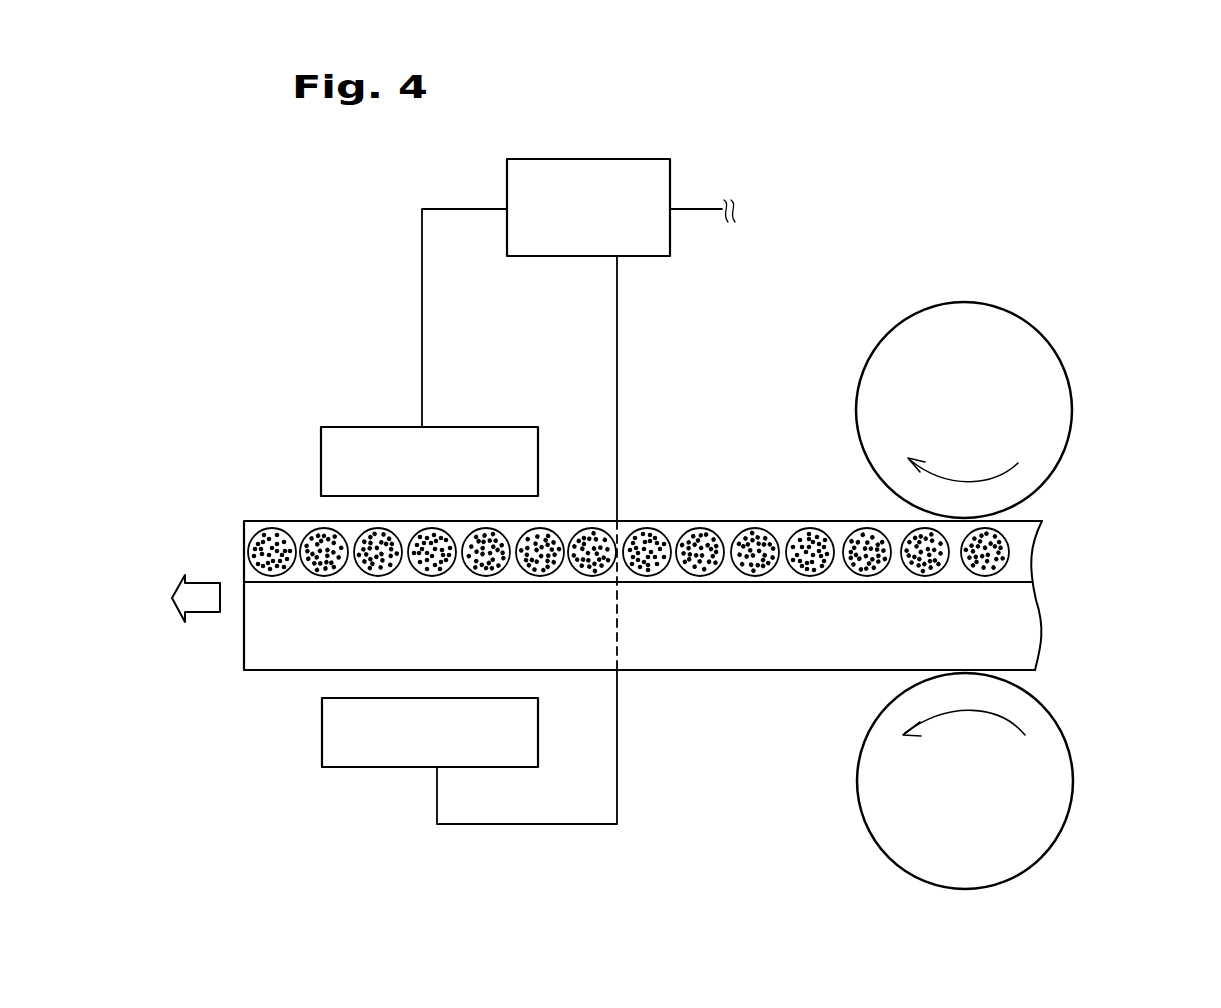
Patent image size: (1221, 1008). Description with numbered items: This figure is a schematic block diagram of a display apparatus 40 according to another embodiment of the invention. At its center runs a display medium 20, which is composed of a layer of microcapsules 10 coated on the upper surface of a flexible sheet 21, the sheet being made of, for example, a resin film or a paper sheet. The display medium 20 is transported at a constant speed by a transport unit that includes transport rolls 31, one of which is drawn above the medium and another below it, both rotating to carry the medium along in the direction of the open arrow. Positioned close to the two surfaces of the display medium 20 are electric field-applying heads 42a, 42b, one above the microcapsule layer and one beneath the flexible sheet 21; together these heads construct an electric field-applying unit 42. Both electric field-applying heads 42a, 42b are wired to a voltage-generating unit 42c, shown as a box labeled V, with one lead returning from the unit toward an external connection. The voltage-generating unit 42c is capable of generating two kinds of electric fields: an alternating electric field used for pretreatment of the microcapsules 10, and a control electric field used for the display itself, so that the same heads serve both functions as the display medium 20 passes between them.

The microcapsules 10 is at (712, 532).
The display medium 20 is at (1051, 578).
The flexible sheet 21 is at (1030, 630).
The transport roll 31 is at (1020, 340).
The display apparatus 40 is at (778, 357).
The electric field-applying unit 42 is at (365, 353).
The electric field-applying head 42a is at (348, 427).
The electric field-applying head 42b is at (373, 767).
The voltage-generating unit 42c is at (566, 257).